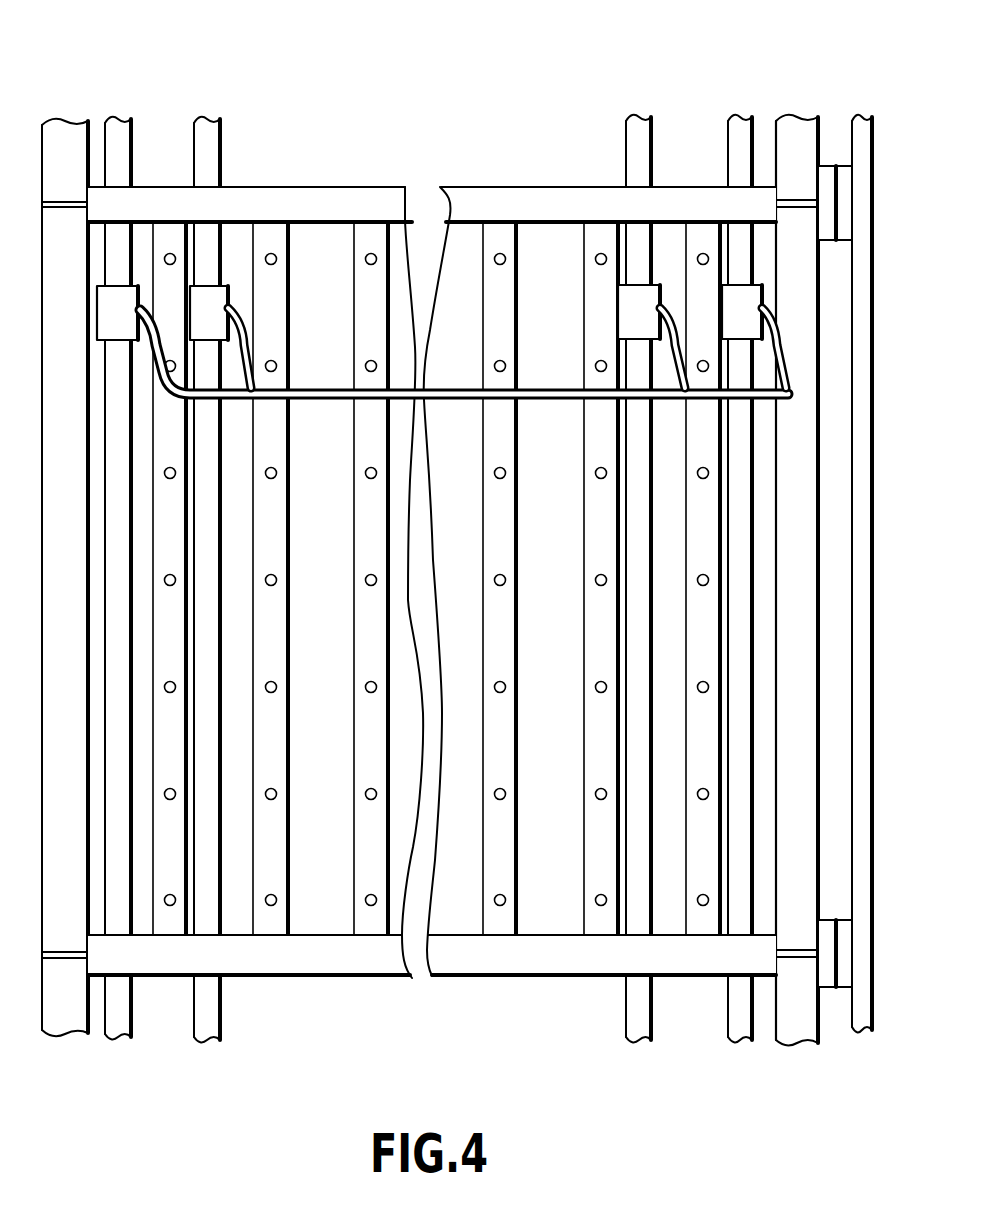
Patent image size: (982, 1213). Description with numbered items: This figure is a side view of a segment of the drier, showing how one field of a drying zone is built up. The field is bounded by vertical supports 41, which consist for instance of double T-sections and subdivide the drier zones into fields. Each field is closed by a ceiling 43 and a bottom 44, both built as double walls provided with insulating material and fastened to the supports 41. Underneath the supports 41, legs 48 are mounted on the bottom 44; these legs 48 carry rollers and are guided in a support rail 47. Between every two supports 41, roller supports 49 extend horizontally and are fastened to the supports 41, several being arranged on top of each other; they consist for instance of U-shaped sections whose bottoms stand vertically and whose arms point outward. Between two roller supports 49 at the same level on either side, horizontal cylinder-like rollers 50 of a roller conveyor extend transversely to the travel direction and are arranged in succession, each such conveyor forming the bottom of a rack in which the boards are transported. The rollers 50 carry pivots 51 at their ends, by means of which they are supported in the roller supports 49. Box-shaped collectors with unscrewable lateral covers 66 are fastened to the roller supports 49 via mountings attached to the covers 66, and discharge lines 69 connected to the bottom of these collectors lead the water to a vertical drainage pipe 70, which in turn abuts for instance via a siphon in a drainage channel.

The vertical support 41 is at (557, 198).
The ceiling 43 is at (67, 262).
The bottom 44 is at (792, 226).
The support rail 47 is at (868, 118).
The leg 48 is at (847, 180).
The roller support 49 is at (497, 236).
The roller 50 is at (207, 140).
The pivot 51 is at (598, 252).
The lateral cover 66 is at (229, 297).
The discharge line 69 is at (243, 333).
The drainage pipe 70 is at (335, 388).